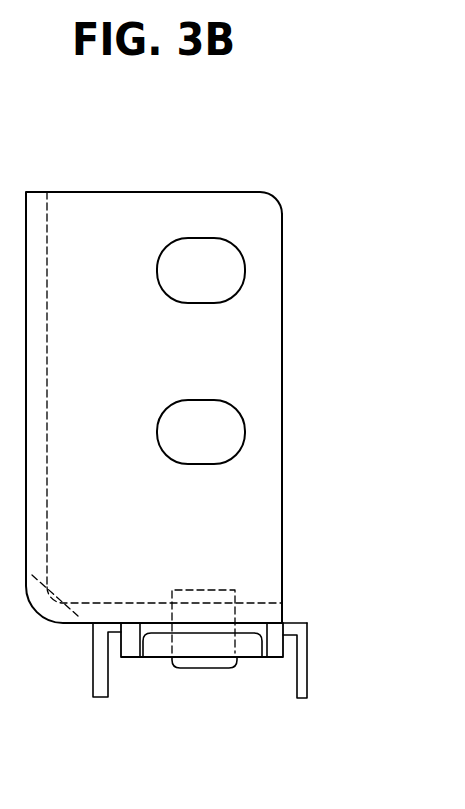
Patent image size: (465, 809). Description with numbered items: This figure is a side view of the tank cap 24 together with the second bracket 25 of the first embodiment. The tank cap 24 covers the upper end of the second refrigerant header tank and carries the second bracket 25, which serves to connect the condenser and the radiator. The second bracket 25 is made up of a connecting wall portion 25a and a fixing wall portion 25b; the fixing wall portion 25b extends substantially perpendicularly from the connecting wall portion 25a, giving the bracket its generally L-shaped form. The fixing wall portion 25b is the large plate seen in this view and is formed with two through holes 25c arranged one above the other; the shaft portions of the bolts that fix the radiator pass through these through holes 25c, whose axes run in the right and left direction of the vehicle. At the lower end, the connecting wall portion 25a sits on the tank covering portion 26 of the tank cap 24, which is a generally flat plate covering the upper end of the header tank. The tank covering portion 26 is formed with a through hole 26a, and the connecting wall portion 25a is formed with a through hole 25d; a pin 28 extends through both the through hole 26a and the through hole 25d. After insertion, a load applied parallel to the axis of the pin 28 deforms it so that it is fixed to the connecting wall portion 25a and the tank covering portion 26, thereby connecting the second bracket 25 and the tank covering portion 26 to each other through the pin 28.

The tank cap 24 is at (239, 174).
The second bracket 25 is at (117, 213).
The connecting wall portion 25a is at (253, 617).
The fixing wall portion 25b is at (248, 353).
The through holes 25c is at (245, 270).
The through hole 25d is at (238, 602).
The tank covering portion 26 is at (160, 647).
The through hole 26a is at (238, 657).
The pin 28 is at (203, 660).